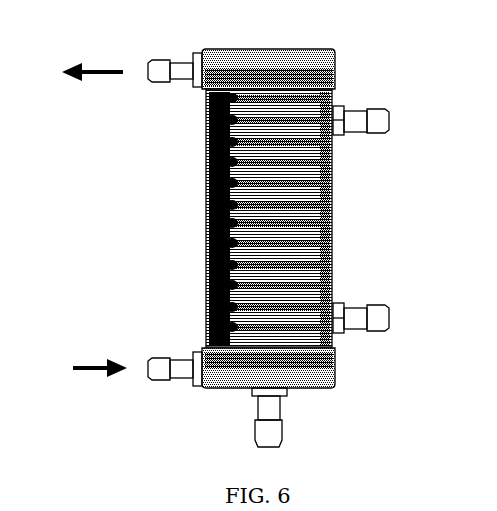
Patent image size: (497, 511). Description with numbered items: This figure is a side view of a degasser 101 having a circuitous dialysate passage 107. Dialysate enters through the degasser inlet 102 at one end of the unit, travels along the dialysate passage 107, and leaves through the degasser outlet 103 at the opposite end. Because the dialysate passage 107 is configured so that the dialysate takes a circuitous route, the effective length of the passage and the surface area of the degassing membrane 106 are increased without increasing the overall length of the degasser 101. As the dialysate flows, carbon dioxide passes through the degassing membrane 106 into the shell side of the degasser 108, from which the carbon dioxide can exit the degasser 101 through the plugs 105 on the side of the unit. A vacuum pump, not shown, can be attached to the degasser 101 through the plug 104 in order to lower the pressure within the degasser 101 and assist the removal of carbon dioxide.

The degasser 101 is at (207, 217).
The degasser inlet 102 is at (163, 382).
The degasser outlet 103 is at (162, 60).
The plug 104 is at (284, 430).
The plugs 105 is at (380, 138).
The degassing membrane 106 is at (208, 148).
The dialysate passage 107 is at (256, 293).
The shell side of the degasser 108 is at (206, 110).